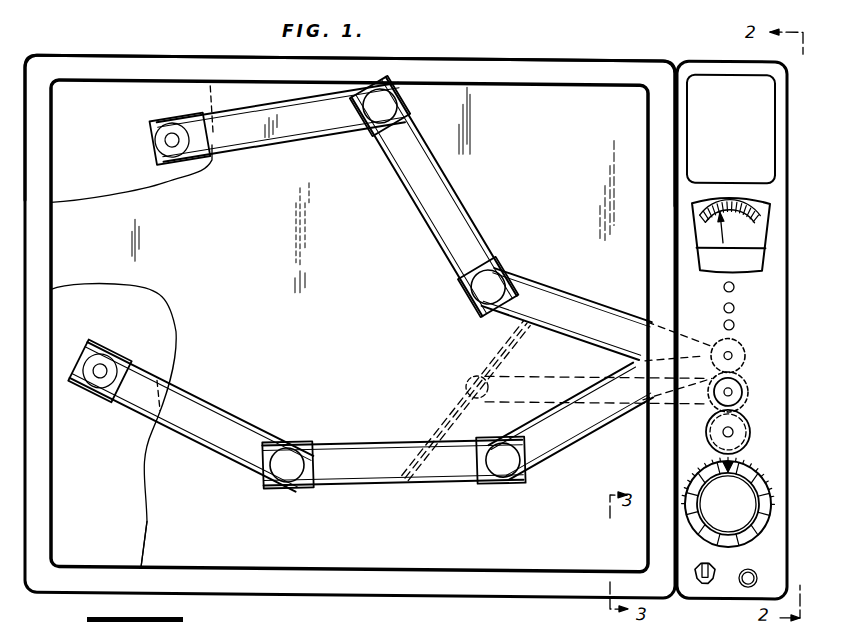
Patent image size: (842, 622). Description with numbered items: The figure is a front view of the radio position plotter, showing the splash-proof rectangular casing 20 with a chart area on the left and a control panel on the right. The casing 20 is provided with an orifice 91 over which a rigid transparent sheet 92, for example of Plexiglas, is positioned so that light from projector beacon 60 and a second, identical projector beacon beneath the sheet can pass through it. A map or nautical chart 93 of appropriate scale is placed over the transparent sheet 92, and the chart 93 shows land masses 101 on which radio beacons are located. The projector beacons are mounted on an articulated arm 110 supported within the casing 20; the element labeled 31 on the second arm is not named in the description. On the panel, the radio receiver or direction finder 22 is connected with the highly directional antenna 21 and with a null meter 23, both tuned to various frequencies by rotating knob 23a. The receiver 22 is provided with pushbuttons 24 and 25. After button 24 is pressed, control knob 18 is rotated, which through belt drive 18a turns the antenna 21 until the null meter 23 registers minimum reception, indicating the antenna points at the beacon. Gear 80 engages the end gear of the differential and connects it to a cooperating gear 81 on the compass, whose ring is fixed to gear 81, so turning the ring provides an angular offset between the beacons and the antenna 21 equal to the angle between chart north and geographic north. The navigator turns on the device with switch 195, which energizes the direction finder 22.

The casing 20 is at (797, 106).
The radio receiver 22 is at (746, 133).
The null meter 23 is at (765, 238).
The knob 23a is at (735, 280).
The pushbutton 24 is at (735, 301).
The pushbutton 25 is at (735, 318).
The control knob 18 is at (748, 385).
The belt drive 18a is at (540, 370).
The gear 80 is at (750, 425).
The gear 81 is at (750, 497).
The switch 195 is at (703, 579).
The orifice 91 is at (550, 80).
The transparent sheet 92 is at (612, 78).
The nautical chart 93 is at (132, 546).
The land masses 101 is at (123, 142).
The projector beacon 60 is at (256, 123).
The second arm 31 is at (188, 395).
The articulated arm 110 is at (523, 220).
The directional antenna 21 is at (452, 409).